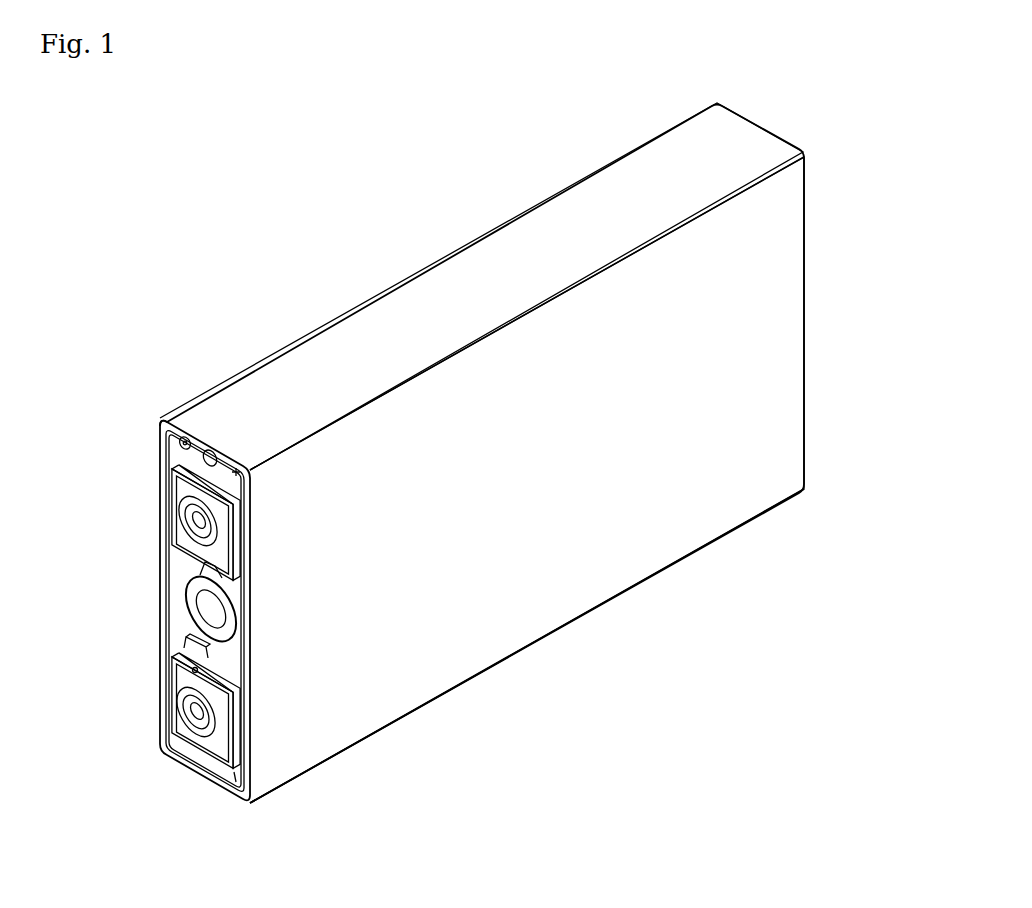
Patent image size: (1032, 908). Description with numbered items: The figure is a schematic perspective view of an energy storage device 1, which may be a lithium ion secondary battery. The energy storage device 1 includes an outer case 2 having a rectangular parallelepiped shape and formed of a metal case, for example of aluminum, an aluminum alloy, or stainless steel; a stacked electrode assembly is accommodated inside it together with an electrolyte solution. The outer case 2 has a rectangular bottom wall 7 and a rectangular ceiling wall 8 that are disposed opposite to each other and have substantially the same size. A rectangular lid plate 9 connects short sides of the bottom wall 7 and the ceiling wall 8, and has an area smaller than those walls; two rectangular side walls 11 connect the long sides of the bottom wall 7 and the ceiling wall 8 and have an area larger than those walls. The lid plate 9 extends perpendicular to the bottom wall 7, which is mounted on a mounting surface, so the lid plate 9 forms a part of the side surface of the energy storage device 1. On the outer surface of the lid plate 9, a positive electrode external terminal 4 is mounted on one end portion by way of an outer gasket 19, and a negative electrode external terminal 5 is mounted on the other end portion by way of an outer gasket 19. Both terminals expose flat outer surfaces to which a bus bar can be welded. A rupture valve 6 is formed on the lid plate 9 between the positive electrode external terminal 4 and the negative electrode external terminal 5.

The energy storage device 1 is at (168, 188).
The outer case 2 is at (477, 240).
The positive electrode external terminal 4 is at (173, 532).
The negative electrode external terminal 5 is at (175, 676).
The rupture valve 6 is at (205, 603).
The bottom wall 7 is at (437, 697).
The ceiling wall 8 is at (327, 330).
The lid plate 9 is at (175, 622).
The side wall 11 is at (580, 595).
The outer gasket 19 is at (175, 470).